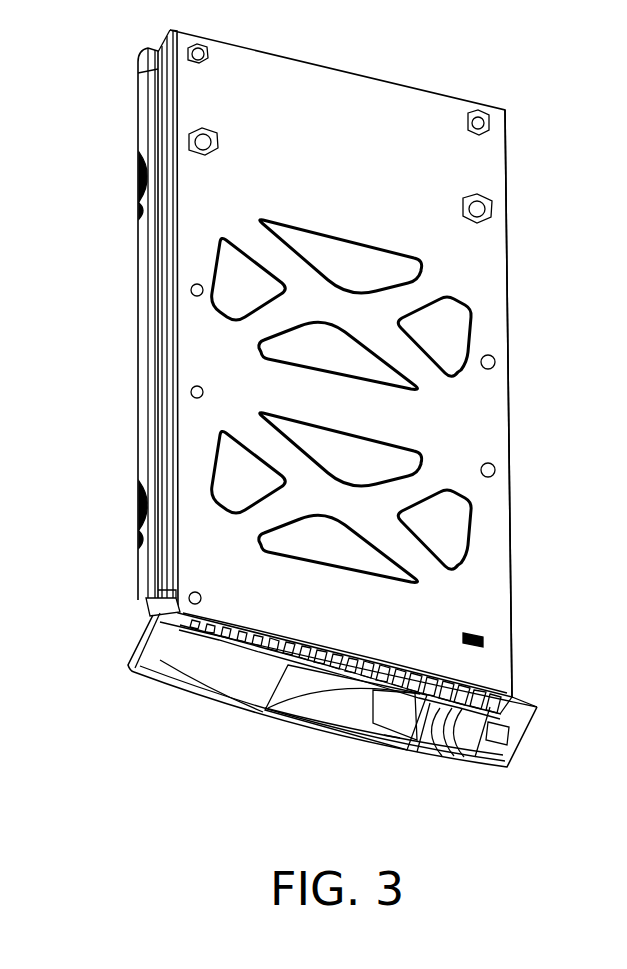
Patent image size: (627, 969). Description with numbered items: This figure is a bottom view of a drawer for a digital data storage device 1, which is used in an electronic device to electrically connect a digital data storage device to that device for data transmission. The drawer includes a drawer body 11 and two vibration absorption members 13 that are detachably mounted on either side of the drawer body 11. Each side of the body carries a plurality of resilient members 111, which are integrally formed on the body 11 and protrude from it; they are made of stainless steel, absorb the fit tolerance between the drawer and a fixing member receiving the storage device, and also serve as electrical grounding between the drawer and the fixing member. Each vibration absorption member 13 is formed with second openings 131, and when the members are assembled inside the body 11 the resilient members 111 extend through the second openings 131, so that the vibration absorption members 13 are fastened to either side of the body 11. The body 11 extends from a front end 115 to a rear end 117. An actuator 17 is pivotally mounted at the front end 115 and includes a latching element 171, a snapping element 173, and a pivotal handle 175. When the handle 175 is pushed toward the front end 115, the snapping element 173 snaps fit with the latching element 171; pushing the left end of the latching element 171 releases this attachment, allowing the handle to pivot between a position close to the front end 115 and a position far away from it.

The drawer for a digital data storage device 1 is at (359, 56).
The drawer body 11 is at (445, 97).
The vibration absorption member 13 is at (143, 55).
The actuator 17 is at (425, 818).
The resilient member 111 is at (143, 172).
The front end 115 is at (510, 700).
The rear end 117 is at (507, 112).
The second opening 131 is at (143, 206).
The latching element 171 is at (454, 758).
The snapping element 173 is at (382, 745).
The pivotal handle 175 is at (193, 700).